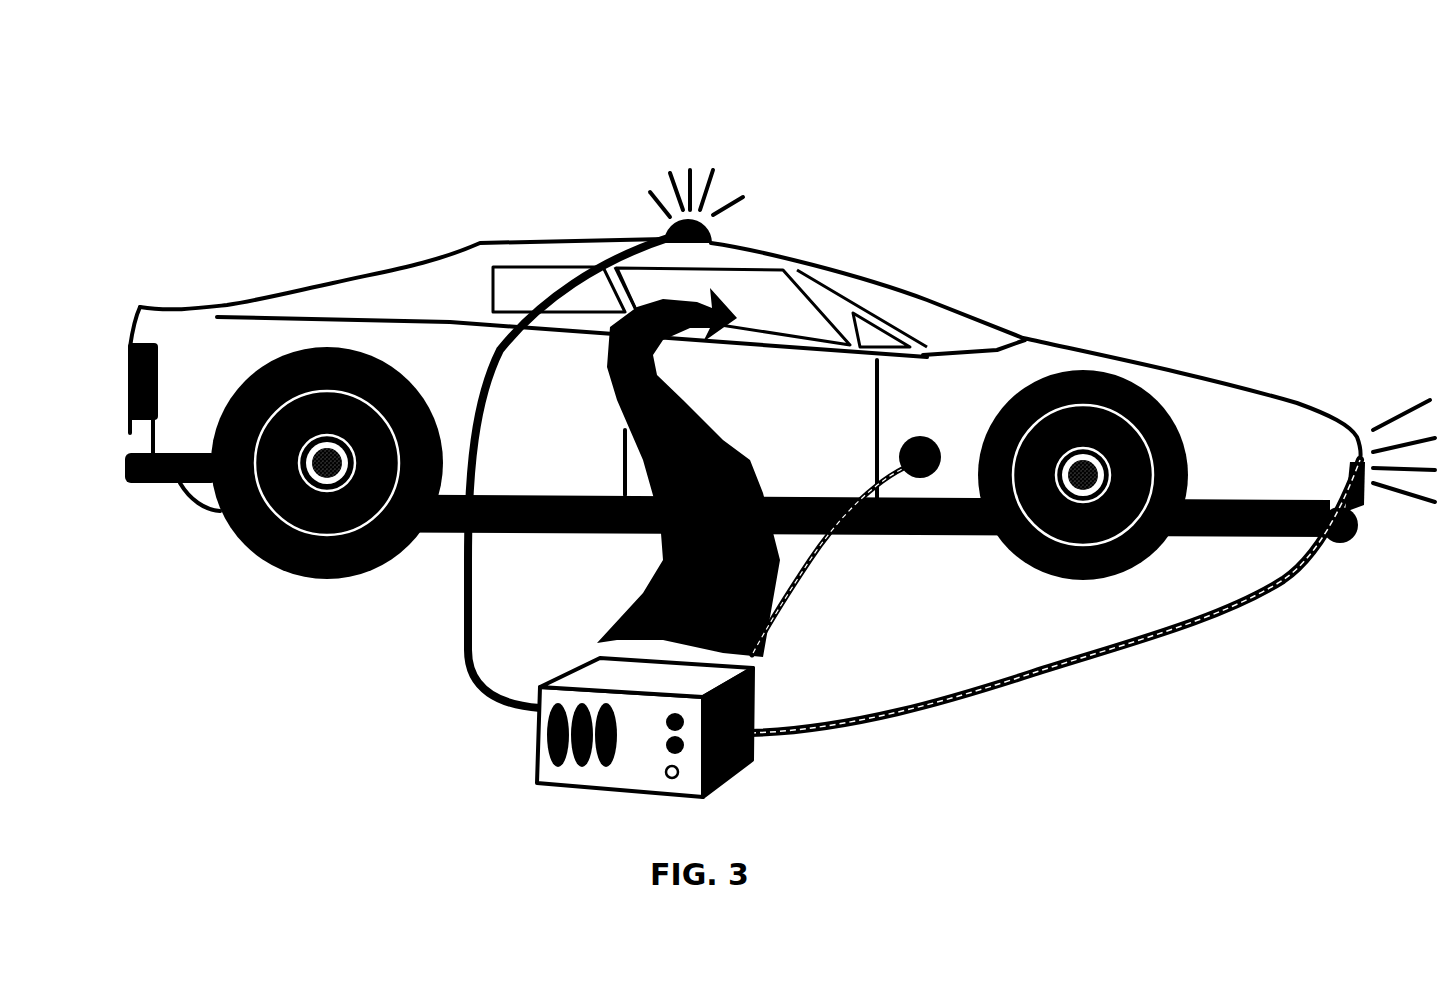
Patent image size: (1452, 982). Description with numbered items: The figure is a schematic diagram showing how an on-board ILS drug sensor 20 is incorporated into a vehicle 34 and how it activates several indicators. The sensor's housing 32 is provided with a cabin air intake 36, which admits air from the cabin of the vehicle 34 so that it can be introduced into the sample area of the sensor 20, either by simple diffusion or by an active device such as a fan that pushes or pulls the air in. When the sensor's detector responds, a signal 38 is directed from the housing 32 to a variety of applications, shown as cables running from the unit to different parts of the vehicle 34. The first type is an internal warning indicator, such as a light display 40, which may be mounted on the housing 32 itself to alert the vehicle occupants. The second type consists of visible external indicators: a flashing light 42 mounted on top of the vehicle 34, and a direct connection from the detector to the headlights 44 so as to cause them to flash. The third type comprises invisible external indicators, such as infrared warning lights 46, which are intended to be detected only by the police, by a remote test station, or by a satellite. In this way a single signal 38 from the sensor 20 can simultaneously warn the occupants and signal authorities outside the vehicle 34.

The on-board ILS drug sensor 20 is at (780, 692).
The housing 32 is at (639, 767).
The vehicle 34 is at (337, 293).
The cabin air intake 36 is at (577, 765).
The signal 38 is at (463, 605).
The light display 40 is at (678, 747).
The flashing light 42 is at (663, 225).
The headlights 44 is at (1373, 428).
The warning lights 46 is at (930, 477).